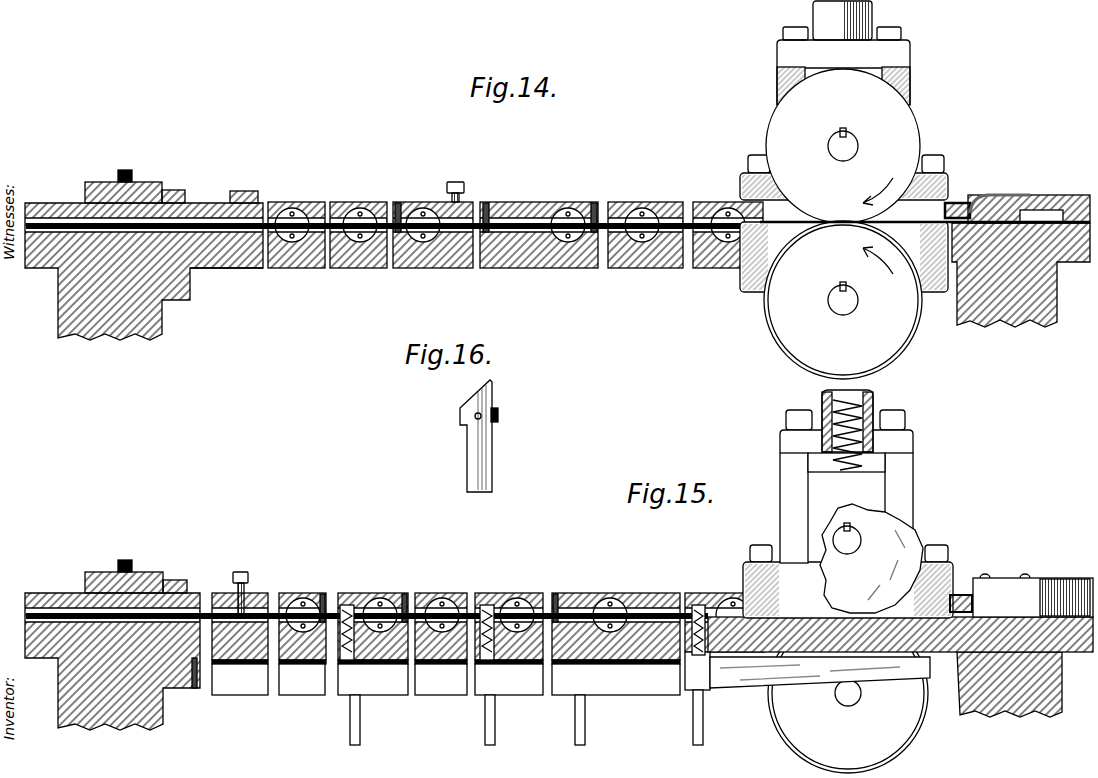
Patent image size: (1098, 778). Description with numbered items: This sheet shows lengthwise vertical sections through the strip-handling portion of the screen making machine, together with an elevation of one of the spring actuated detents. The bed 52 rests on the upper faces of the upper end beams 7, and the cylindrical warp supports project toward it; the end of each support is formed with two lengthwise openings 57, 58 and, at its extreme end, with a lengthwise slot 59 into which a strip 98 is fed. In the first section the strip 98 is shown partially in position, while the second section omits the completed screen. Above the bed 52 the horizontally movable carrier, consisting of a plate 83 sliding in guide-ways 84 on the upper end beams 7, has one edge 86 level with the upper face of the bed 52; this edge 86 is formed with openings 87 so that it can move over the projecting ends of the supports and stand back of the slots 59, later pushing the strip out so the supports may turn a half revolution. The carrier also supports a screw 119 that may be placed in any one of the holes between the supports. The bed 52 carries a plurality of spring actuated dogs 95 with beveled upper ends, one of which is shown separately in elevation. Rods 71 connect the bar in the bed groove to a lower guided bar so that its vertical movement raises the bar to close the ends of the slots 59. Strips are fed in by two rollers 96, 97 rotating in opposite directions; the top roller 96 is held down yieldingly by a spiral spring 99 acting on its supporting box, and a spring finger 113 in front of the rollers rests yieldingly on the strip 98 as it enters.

In FIG. 14, the upper end beams 7 is at (557, 251).
In FIG. 15, the upper end beams 7 is at (559, 640).
In FIG. 14, the bed 52 is at (251, 268).
In FIG. 15, the bed 52 is at (258, 695).
In FIG. 14, the opening 57 is at (570, 208).
In FIG. 15, the opening 57 is at (303, 598).
In FIG. 14, the opening 58 is at (568, 240).
In FIG. 15, the opening 58 is at (303, 630).
In FIG. 14, the lengthwise slot 59 is at (592, 207).
In FIG. 15, the lengthwise slot 59 is at (326, 598).
In FIG. 15, the rods 71 is at (361, 732).
In FIG. 14, the plate 83 is at (346, 208).
In FIG. 15, the plate 83 is at (438, 596).
In FIG. 14, the guide-ways 84 is at (106, 190).
In FIG. 15, the guide-ways 84 is at (106, 580).
In FIG. 14, the edge 86 is at (398, 210).
In FIG. 15, the edge 86 is at (405, 598).
In FIG. 14, the openings 87 is at (300, 210).
In FIG. 15, the openings 87 is at (380, 598).
In FIG. 16, the spring actuated dogs 95 is at (491, 447).
In FIG. 15, the spring actuated dogs 95 is at (345, 655).
In FIG. 14, the top roller 96 is at (908, 122).
In FIG. 15, the top roller 96 is at (922, 532).
In FIG. 14, the roller 97 is at (905, 350).
In FIG. 15, the roller 97 is at (914, 736).
In FIG. 14, the strip 98 is at (1032, 221).
In FIG. 15, the strip 98 is at (1033, 595).
In FIG. 15, the spiral spring 99 is at (875, 408).
In FIG. 14, the spring finger 113 is at (981, 193).
In FIG. 15, the screw 119 is at (242, 568).